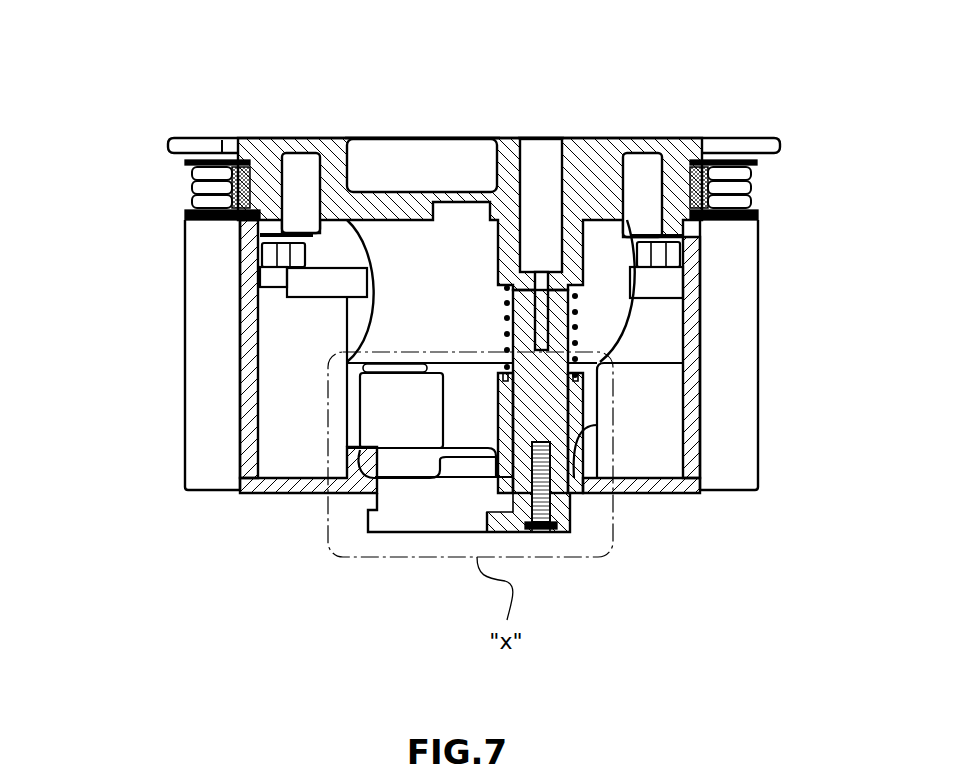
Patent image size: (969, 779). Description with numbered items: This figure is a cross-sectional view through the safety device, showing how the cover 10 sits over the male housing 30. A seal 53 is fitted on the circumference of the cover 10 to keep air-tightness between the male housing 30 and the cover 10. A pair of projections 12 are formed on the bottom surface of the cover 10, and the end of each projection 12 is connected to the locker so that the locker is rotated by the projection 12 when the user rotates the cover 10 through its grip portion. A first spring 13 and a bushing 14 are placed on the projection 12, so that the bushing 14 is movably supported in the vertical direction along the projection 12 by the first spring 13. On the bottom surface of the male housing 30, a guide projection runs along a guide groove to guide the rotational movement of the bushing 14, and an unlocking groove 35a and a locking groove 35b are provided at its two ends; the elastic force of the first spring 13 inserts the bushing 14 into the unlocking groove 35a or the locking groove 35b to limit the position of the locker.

The cover 10 is at (200, 138).
The seal 53 is at (247, 138).
The projection 12 is at (575, 257).
The first spring 13 is at (577, 311).
The bushing 14 is at (577, 417).
The male housing 30 is at (208, 343).
The unlocking groove 35a is at (580, 432).
The locking groove 35b is at (375, 456).